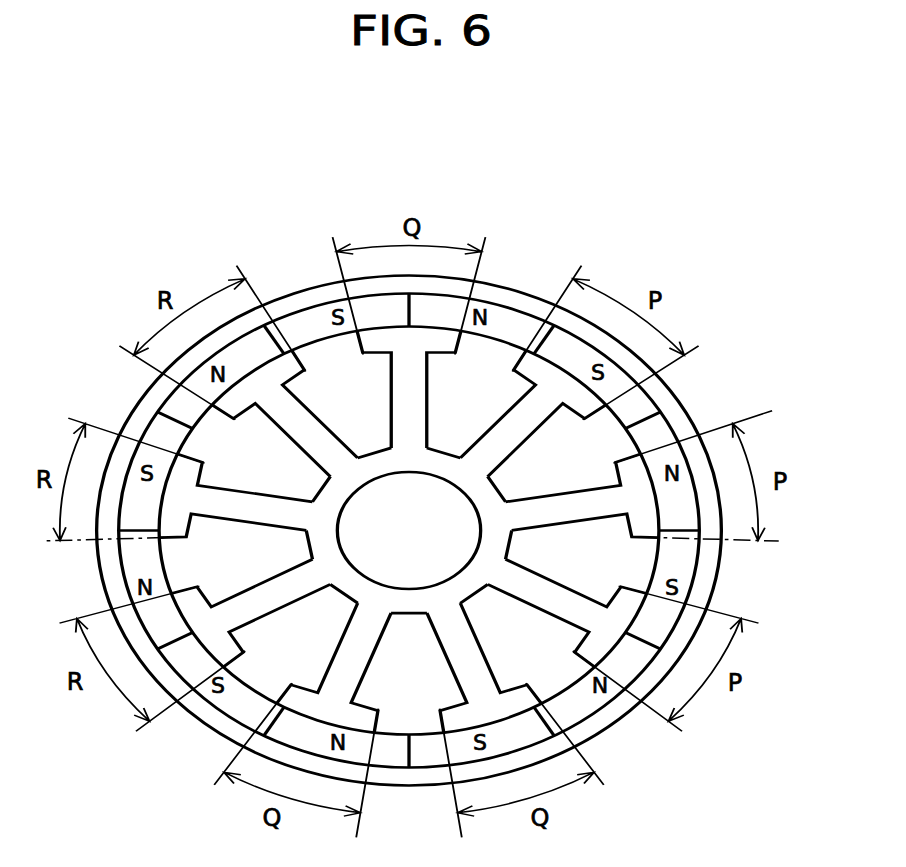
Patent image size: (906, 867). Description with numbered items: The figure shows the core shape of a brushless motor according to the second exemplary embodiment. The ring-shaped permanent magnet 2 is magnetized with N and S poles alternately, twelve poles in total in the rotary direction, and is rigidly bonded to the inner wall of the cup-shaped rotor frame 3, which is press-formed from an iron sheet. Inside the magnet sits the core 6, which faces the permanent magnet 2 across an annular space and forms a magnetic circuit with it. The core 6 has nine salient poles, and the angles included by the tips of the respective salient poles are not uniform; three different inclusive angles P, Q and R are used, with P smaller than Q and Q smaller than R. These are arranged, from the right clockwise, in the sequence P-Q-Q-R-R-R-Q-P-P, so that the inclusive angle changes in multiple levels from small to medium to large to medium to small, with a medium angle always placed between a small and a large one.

The permanent magnet 2 is at (638, 408).
The rotor frame 3 is at (680, 427).
The core 6 is at (540, 515).